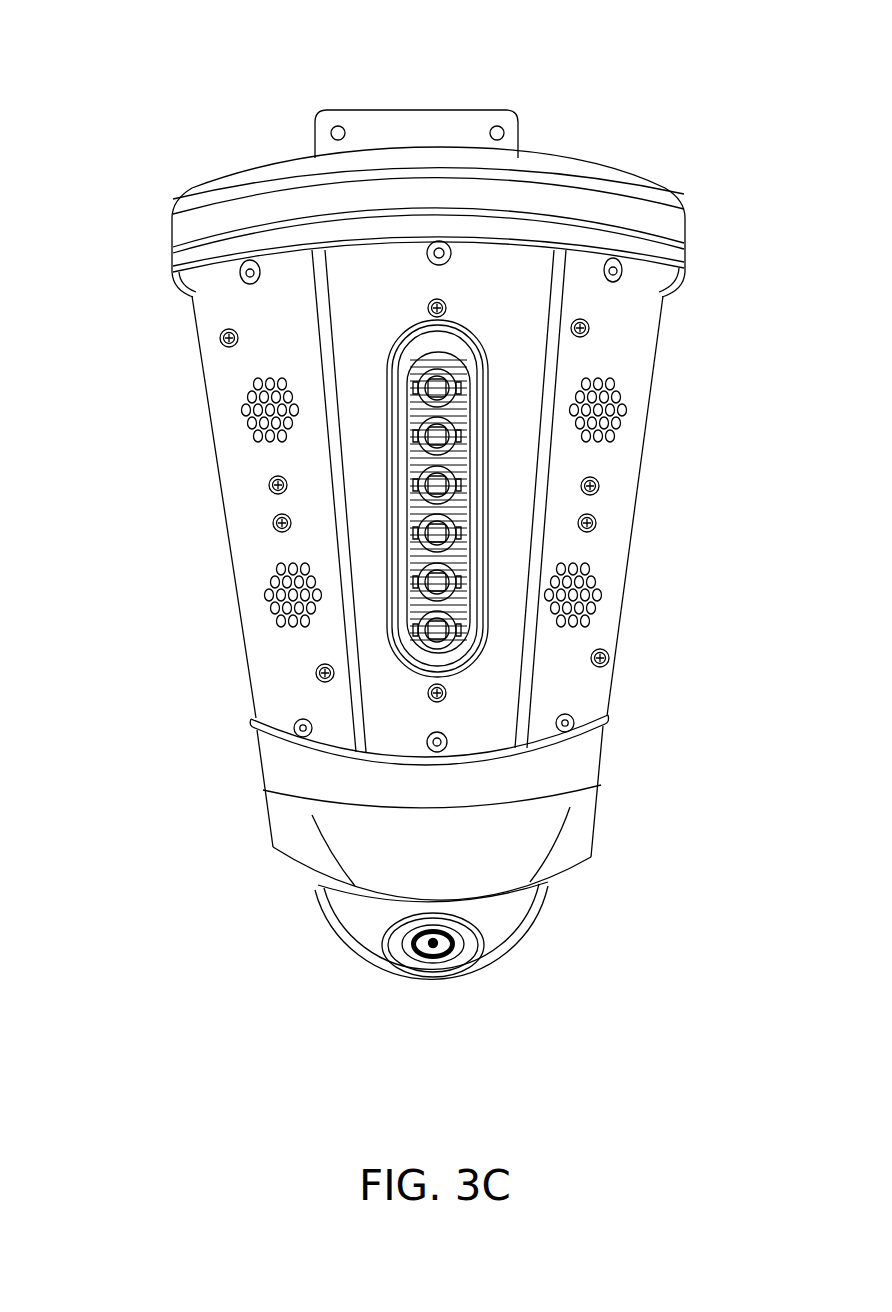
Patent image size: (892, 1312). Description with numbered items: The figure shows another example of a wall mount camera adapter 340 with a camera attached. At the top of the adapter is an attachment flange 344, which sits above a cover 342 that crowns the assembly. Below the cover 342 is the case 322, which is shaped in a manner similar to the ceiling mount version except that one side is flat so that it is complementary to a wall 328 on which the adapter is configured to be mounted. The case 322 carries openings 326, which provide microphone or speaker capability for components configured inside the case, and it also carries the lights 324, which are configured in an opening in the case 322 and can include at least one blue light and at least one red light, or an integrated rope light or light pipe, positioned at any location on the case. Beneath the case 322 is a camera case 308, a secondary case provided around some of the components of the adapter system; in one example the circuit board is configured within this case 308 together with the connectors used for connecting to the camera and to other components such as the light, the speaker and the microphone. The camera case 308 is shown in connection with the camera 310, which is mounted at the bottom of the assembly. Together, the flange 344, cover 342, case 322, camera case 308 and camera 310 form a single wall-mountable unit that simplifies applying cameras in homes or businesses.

The wall mount camera adapter 340 is at (86, 98).
The attachment flange 344 is at (477, 110).
The cover 342 is at (633, 173).
The case 322 is at (578, 691).
The openings 326 is at (600, 575).
The lights 324 is at (478, 340).
The wall 328 is at (701, 734).
The camera case 308 is at (596, 806).
The camera 310 is at (523, 938).